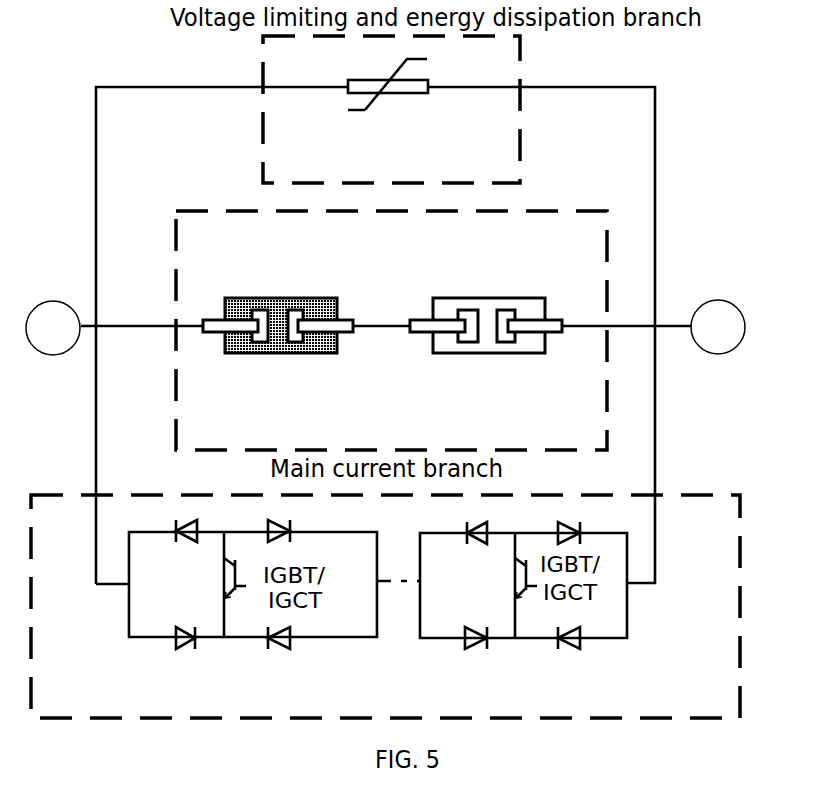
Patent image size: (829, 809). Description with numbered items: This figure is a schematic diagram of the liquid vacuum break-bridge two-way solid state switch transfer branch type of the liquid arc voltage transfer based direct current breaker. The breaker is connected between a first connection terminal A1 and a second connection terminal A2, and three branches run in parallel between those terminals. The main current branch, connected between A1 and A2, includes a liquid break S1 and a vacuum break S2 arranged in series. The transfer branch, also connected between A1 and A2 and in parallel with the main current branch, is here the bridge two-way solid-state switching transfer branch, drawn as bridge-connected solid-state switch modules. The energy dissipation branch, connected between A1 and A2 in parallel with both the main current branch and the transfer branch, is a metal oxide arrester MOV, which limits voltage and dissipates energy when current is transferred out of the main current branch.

The first terminal A1 is at (53, 328).
The second terminal A2 is at (718, 327).
The liquid break switch S1 is at (283, 334).
The vacuum break switch S2 is at (500, 334).
The metal oxide varistor MOV is at (388, 110).